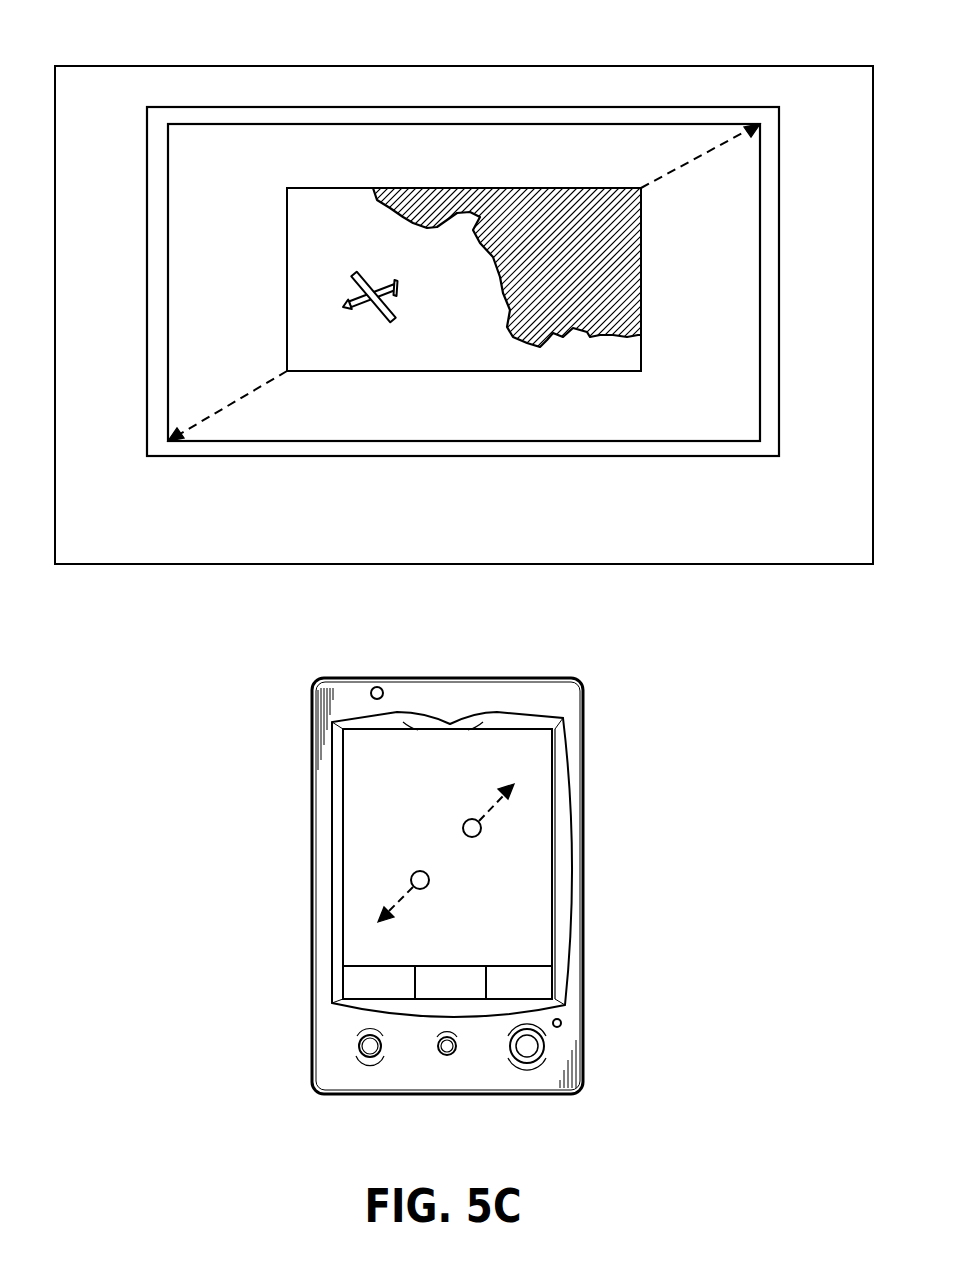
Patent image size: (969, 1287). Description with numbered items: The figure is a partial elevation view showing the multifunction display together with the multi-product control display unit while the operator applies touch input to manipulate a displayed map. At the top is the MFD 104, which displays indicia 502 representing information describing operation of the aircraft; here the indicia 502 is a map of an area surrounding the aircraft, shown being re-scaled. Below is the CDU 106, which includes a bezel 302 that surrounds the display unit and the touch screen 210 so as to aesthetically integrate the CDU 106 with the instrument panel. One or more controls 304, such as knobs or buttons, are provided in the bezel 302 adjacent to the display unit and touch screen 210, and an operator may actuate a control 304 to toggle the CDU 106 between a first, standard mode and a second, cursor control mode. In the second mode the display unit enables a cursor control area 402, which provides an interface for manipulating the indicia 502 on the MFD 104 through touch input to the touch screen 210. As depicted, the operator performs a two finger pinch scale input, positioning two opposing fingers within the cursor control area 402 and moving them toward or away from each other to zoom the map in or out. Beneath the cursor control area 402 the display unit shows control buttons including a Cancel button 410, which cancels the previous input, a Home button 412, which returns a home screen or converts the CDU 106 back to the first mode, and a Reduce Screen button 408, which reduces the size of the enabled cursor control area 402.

The MFD 104 is at (553, 133).
The indicia 502 is at (245, 160).
The CDU 106 is at (573, 713).
The bezel 302 is at (523, 690).
The cursor control area 402 is at (368, 750).
The touch screen 210 is at (533, 822).
The Cancel button 410 is at (355, 983).
The Home button 412 is at (450, 973).
The Reduce Screen button 408 is at (537, 983).
The controls 304 is at (517, 1060).